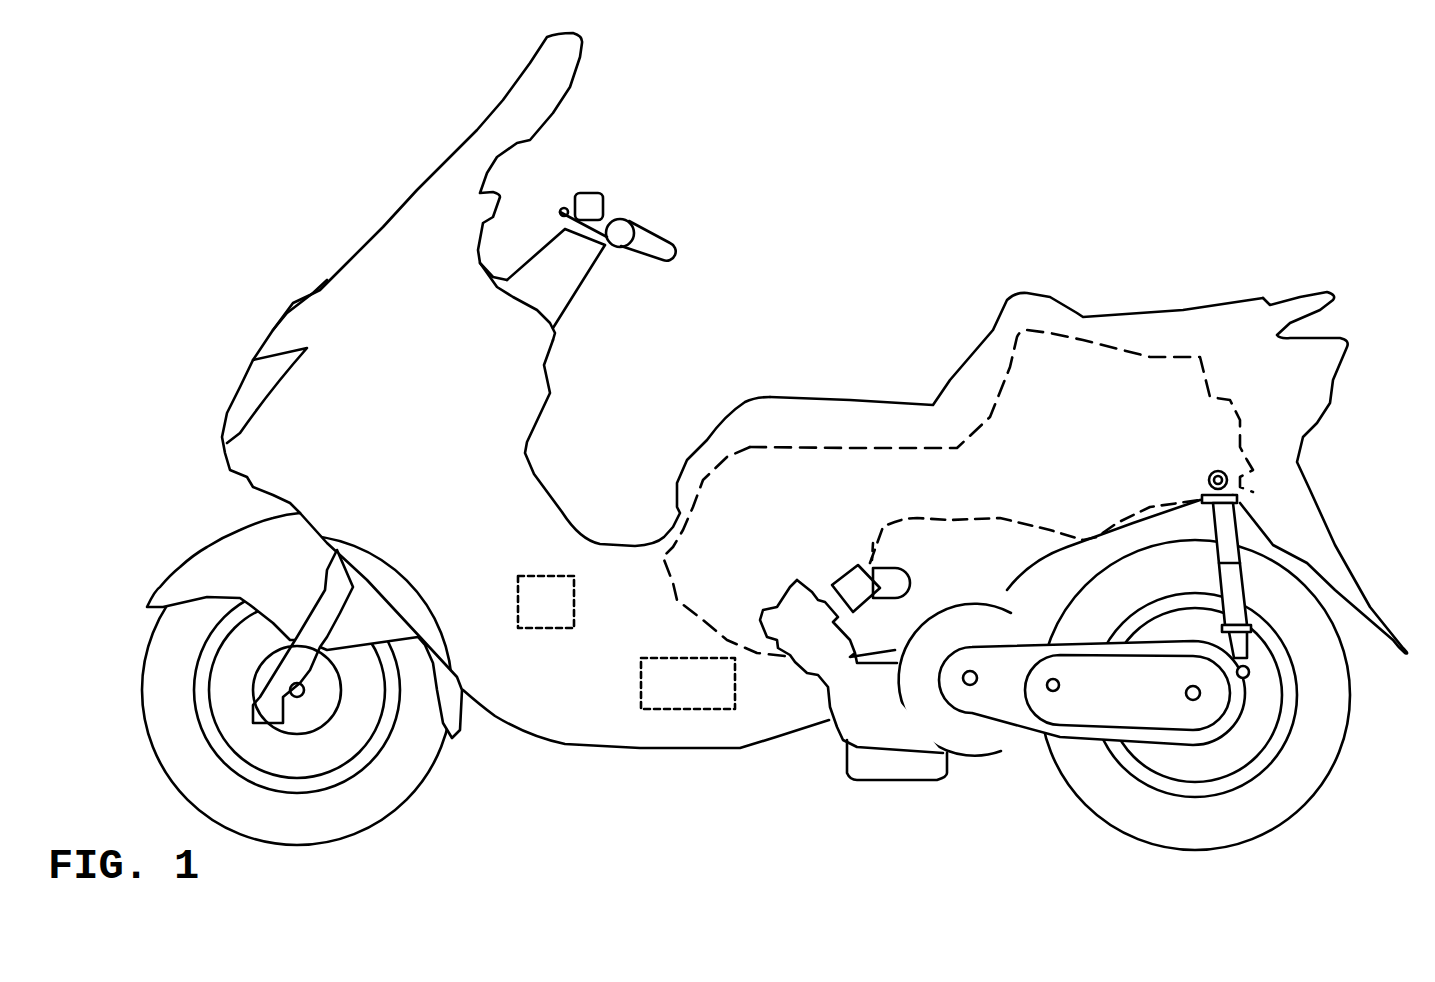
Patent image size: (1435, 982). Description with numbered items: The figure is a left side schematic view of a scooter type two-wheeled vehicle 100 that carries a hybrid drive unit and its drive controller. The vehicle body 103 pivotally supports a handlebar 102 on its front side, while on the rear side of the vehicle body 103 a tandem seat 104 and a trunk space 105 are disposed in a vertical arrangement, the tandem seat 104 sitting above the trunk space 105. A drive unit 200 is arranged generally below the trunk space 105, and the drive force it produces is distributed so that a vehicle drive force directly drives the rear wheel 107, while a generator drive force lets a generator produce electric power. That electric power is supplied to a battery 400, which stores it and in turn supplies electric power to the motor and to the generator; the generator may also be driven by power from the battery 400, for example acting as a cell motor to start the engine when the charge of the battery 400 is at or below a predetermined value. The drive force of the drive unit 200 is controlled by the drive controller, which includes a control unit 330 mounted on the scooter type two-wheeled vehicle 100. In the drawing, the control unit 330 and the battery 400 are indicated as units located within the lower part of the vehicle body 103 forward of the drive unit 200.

The scooter type two-wheeled vehicle 100 is at (780, 441).
The handlebar 102 is at (613, 222).
The vehicle body 103 is at (564, 510).
The tandem seat 104 is at (948, 378).
The trunk space 105 is at (1093, 370).
The rear wheel 107 is at (1307, 760).
The drive unit 200 is at (824, 782).
The control unit 330 is at (535, 576).
The battery 400 is at (690, 710).